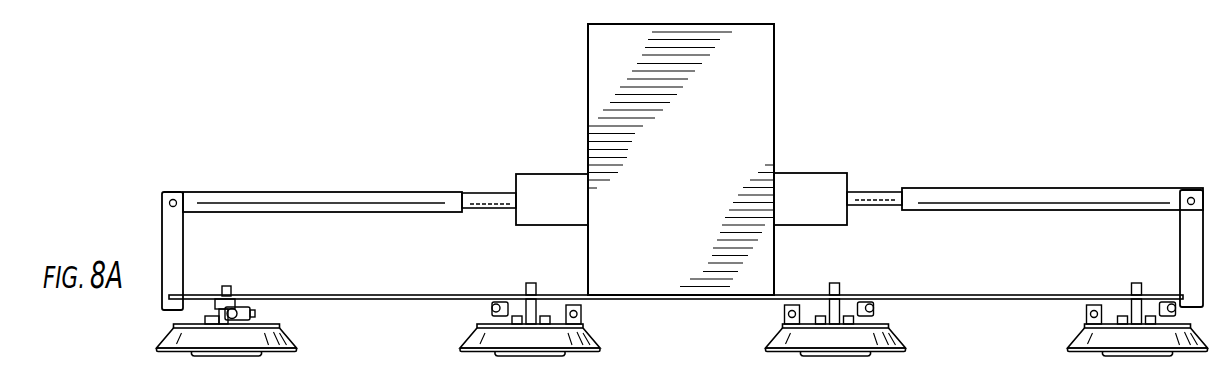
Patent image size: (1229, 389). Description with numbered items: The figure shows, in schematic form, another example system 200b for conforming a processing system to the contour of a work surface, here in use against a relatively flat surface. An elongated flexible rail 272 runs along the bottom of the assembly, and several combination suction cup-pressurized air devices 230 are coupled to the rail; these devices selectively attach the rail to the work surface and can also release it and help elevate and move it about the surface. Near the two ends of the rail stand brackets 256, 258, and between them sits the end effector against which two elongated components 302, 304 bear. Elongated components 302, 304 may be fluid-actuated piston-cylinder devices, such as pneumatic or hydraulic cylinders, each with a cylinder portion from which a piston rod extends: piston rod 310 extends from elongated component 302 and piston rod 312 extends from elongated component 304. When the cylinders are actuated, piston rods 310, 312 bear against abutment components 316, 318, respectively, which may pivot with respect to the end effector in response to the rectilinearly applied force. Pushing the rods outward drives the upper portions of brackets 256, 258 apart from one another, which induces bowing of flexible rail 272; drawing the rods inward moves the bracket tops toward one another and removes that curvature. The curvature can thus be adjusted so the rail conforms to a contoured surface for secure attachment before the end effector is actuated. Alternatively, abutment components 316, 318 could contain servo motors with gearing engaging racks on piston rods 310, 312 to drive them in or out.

The system 200b is at (410, 115).
The abutment component 318 is at (549, 174).
The abutment component 316 is at (803, 185).
The piston rod 312 is at (488, 200).
The piston rod 310 is at (880, 200).
The elongated component 304 is at (343, 198).
The elongated component 302 is at (1040, 197).
The bracket 258 is at (174, 245).
The bracket 256 is at (1191, 233).
The flexible rail 272 is at (339, 300).
The suction cup-pressurized air device 230 is at (597, 339).